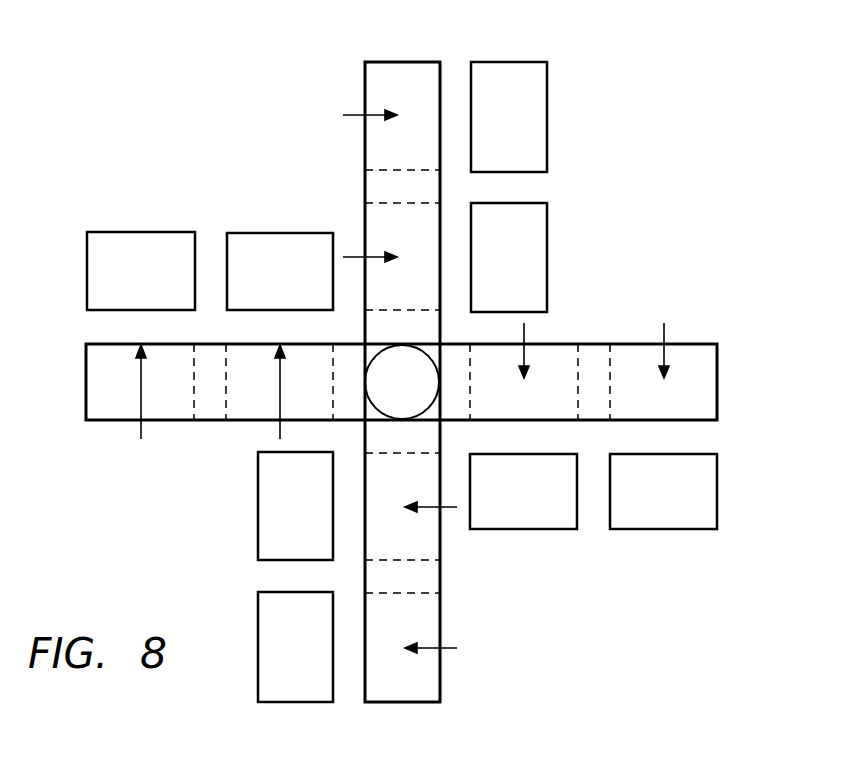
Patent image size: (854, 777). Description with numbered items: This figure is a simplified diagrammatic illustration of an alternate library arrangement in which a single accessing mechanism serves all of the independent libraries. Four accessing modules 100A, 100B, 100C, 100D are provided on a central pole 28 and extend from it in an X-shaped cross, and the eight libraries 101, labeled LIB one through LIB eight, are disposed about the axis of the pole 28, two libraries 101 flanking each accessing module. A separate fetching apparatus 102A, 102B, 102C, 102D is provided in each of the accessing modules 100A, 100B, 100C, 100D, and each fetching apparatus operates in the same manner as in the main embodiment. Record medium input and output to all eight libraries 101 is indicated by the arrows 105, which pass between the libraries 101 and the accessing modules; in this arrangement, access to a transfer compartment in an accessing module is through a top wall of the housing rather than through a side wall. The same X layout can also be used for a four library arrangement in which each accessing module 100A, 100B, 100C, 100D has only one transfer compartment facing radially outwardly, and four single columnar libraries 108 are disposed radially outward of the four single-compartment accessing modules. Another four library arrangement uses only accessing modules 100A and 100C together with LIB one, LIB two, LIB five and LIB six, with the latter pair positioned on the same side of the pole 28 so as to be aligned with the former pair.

The single columnar library 108 is at (424, 43).
The pole 28 is at (414, 393).
The accessing module 100A is at (167, 378).
The accessing module 100B is at (428, 152).
The accessing module 100C is at (549, 411).
The accessing module 100D is at (428, 542).
The fetching apparatus 102A is at (205, 410).
The fetching apparatus 102B is at (374, 182).
The fetching apparatus 102C is at (600, 357).
The fetching apparatus 102D is at (430, 580).
The arrows 105 is at (355, 114).
The library 101 is at (228, 233).